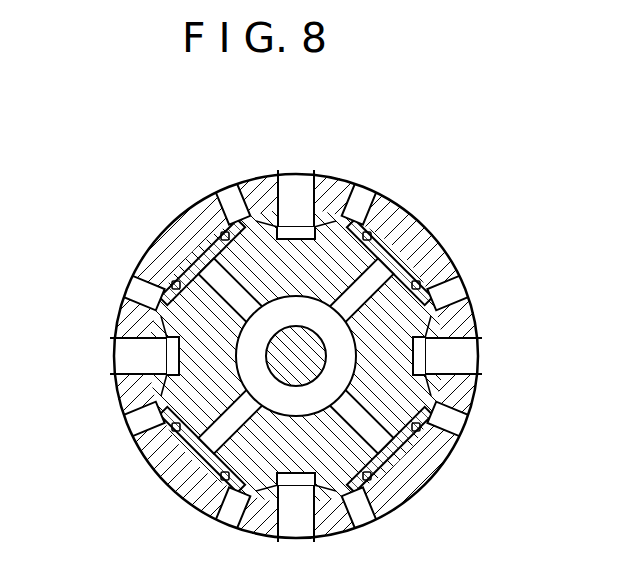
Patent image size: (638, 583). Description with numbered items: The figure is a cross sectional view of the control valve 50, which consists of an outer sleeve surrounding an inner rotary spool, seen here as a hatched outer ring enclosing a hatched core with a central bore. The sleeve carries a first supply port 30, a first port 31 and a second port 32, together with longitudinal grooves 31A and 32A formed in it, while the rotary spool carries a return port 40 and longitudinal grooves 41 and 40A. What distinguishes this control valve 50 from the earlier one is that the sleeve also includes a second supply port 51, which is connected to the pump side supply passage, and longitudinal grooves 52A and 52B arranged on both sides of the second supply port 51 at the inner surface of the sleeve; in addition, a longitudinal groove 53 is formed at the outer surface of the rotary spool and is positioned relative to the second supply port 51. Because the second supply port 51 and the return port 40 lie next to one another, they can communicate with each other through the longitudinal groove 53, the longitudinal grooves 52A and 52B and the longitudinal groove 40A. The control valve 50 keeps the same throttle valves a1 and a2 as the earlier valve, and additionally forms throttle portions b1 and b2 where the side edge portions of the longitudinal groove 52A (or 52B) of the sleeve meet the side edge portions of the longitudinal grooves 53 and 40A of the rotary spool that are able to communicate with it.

The first supply port 30 is at (288, 192).
The first port 31 is at (343, 185).
The longitudinal groove 31A is at (352, 226).
The second port 32 is at (243, 182).
The longitudinal groove 32A is at (222, 232).
The return port 40 is at (232, 301).
The longitudinal groove 40A is at (200, 283).
The longitudinal groove 41 is at (307, 197).
The control valve 50 is at (106, 166).
The second supply port 51 is at (467, 358).
The longitudinal groove 52A is at (392, 425).
The longitudinal groove 52B is at (433, 307).
The longitudinal groove 53 is at (468, 346).
The throttle valve a1 is at (265, 213).
The throttle valve a2 is at (368, 232).
The throttle portion b1 is at (390, 445).
The throttle portion b2 is at (420, 292).